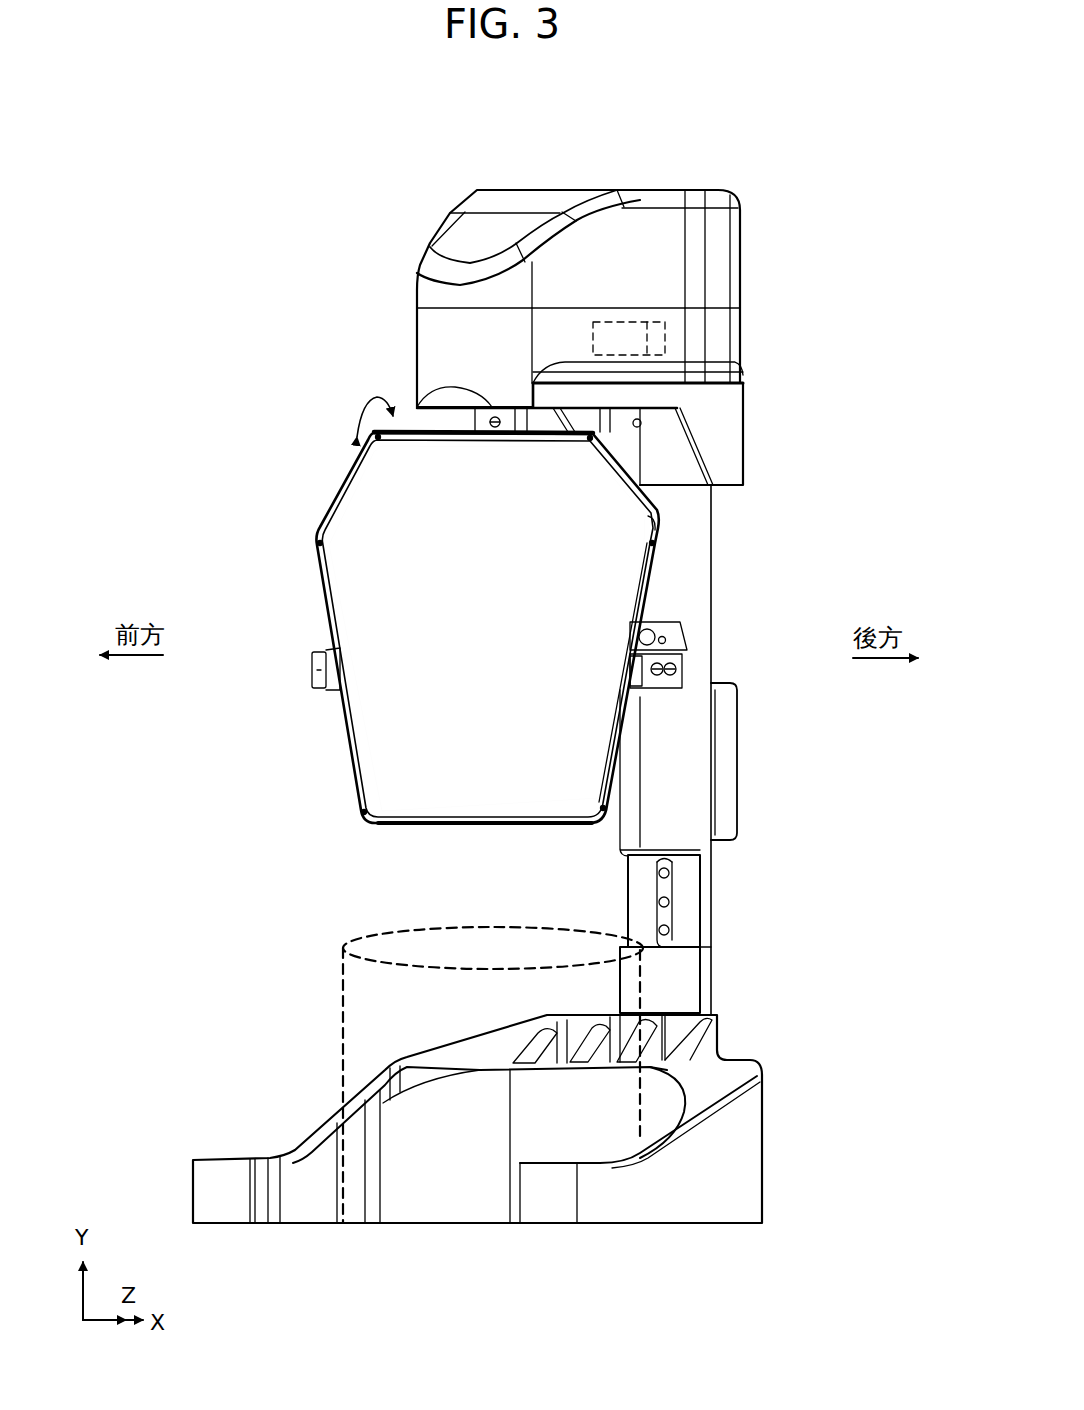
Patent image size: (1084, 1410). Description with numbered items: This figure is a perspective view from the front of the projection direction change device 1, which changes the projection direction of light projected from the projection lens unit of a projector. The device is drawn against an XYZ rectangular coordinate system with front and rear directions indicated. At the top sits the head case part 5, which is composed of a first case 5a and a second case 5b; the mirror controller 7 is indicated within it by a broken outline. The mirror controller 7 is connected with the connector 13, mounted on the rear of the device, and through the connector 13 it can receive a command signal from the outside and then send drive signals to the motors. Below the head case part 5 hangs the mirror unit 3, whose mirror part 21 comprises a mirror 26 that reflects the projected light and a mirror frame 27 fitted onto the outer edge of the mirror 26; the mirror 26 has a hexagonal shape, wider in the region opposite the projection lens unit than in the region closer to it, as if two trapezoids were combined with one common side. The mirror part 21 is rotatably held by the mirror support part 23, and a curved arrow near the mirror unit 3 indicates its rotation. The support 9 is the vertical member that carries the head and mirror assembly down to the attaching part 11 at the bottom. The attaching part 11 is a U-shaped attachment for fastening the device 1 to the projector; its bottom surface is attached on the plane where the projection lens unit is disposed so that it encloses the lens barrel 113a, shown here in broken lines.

The projection direction change device 1 is at (552, 141).
The mirror unit 3 is at (327, 442).
The head case part 5 is at (338, 252).
The first case 5a is at (415, 293).
The second case 5b is at (415, 340).
The mirror controller 7 is at (696, 343).
The support 9 is at (692, 583).
The attaching part 11 is at (297, 1147).
The connector 13 is at (725, 760).
The mirror part 21 is at (230, 468).
The mirror support part 23 is at (688, 648).
The mirror 26 is at (352, 505).
The mirror frame 27 is at (318, 558).
The lens barrel 113a is at (343, 1000).